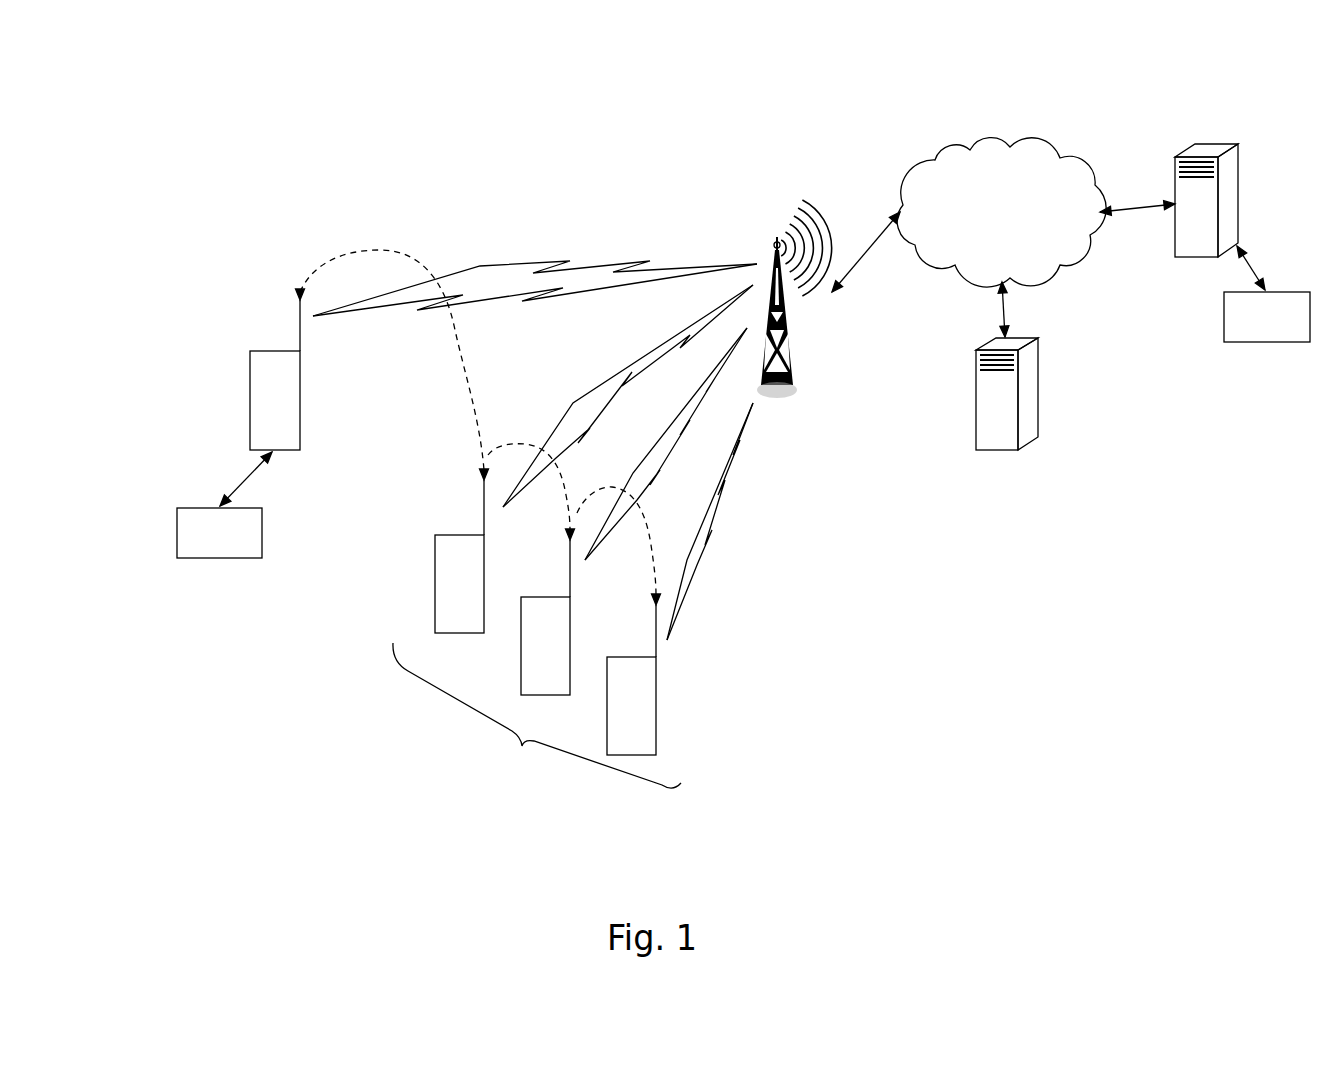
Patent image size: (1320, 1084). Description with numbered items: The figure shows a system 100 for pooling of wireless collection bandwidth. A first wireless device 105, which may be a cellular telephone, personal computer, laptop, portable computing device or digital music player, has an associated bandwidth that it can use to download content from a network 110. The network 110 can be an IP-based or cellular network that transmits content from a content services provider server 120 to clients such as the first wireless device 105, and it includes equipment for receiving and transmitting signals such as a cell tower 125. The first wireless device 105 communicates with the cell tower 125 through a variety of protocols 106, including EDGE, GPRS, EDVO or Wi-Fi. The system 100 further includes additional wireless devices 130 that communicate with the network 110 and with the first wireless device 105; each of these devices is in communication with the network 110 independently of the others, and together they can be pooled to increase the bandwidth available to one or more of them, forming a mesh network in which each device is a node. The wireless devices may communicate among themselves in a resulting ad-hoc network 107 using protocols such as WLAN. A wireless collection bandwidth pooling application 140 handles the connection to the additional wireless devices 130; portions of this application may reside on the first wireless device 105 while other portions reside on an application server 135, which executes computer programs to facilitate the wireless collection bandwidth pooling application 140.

The system 100 is at (188, 118).
The first wireless device 105 is at (250, 396).
The protocols 106 is at (730, 437).
The ad-hoc network 107 is at (362, 253).
The network 110 is at (1001, 212).
The content services provider server 120 is at (1007, 408).
The cell tower 125 is at (780, 217).
The additional wireless devices 130 is at (537, 634).
The application server 135 is at (1206, 214).
The wireless collection bandwidth pooling application 140 is at (743, 425).